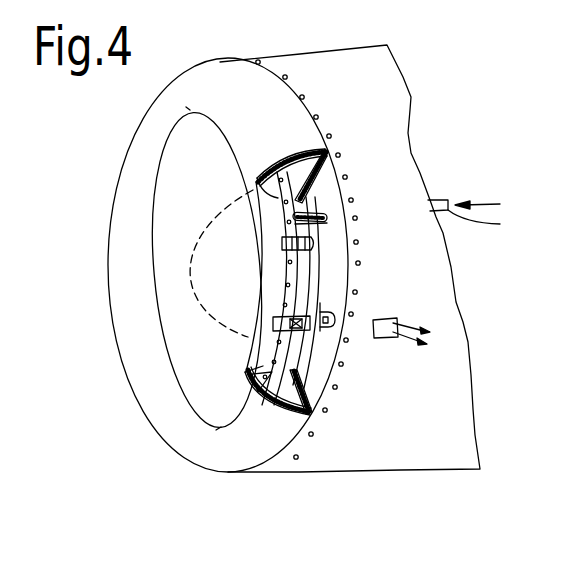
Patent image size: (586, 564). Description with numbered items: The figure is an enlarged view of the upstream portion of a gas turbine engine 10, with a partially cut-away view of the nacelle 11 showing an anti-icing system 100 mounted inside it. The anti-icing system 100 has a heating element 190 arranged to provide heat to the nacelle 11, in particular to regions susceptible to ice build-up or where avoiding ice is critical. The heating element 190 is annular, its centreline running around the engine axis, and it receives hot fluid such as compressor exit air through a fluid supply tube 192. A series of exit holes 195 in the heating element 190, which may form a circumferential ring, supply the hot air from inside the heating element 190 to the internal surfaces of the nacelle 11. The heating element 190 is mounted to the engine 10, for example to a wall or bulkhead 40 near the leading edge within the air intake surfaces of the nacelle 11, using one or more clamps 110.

The gas turbine engine 10 is at (386, 485).
The nacelle 11 is at (193, 432).
The wall or bulkhead 40 is at (306, 194).
The anti-icing system 100 is at (297, 295).
The clamp 110 is at (307, 337).
The heating element 190 is at (322, 211).
The fluid supply tube 192 is at (327, 225).
The exit holes 195 is at (253, 392).